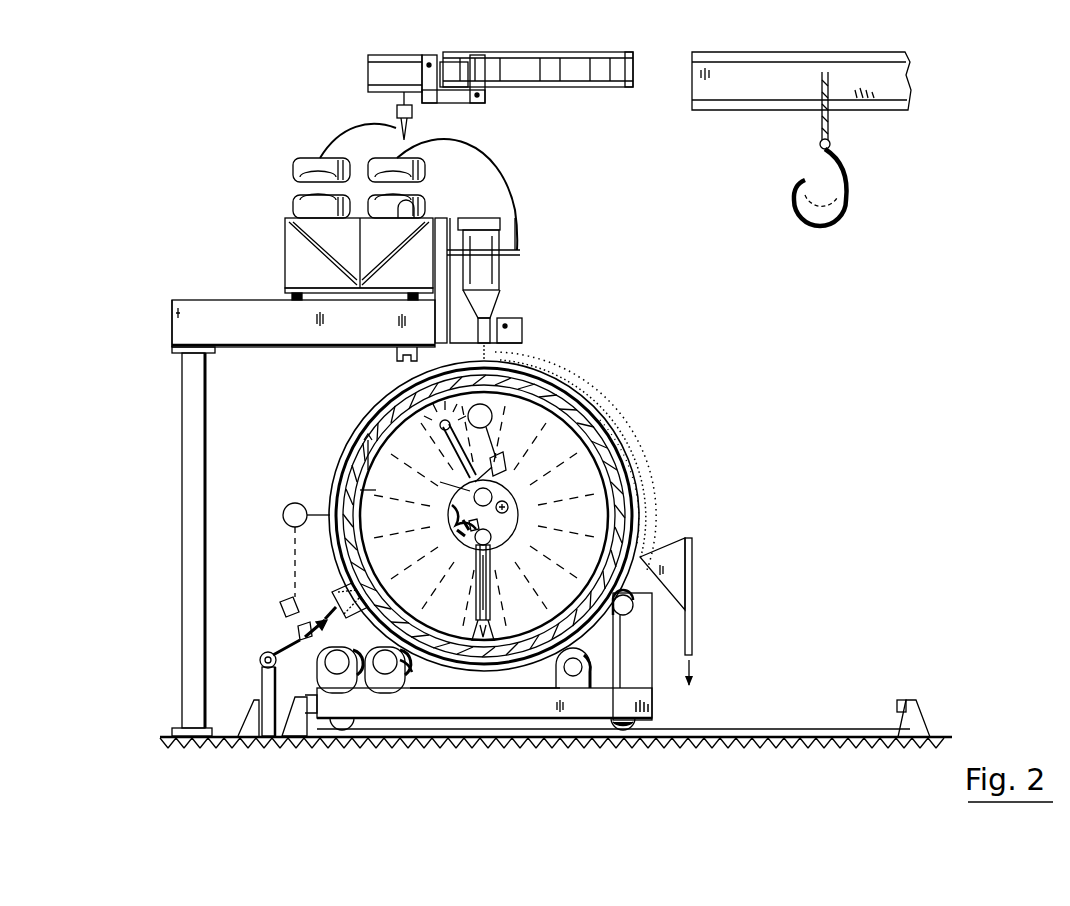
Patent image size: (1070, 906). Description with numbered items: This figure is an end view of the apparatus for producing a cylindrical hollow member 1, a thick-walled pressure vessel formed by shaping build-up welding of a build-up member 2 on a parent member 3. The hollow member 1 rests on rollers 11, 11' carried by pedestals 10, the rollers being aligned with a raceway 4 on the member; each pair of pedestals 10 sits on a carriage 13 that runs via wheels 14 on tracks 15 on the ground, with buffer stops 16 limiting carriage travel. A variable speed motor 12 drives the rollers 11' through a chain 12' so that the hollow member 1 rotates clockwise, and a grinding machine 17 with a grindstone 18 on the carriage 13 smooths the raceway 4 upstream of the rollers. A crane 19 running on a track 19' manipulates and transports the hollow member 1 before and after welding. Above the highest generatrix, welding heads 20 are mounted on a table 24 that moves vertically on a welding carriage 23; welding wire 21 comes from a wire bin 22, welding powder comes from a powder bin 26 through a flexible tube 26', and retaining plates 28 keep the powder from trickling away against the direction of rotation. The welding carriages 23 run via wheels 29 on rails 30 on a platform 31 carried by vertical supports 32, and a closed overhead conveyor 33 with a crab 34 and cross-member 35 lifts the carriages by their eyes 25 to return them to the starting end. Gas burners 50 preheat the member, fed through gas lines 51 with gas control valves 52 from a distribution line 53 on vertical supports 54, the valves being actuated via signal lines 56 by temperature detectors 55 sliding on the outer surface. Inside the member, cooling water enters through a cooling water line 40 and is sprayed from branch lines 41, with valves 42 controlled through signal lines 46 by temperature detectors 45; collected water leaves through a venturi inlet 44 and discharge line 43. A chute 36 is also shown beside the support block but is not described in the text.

The cylindrical hollow member 1 is at (315, 482).
The build-up member 2 is at (355, 440).
The parent member 3 is at (360, 461).
The raceway 4 is at (360, 408).
The pedestal 10 is at (430, 678).
The roller 11 is at (587, 722).
The roller 11' is at (441, 728).
The variable speed motor 12 is at (354, 721).
The chain 12' is at (401, 721).
The carriage 13 is at (552, 712).
The wheel 14 is at (343, 730).
The track 15 is at (752, 738).
The buffer stop 16 is at (292, 737).
The grinding machine 17 is at (655, 660).
The grindstone 18 is at (632, 606).
The crane 19 is at (867, 149).
The crane track 19' is at (818, 107).
The welding head 20 is at (512, 330).
The welding wire 21 is at (398, 157).
The wire bin 22 is at (295, 167).
The welding carriage 23 is at (281, 226).
The table 24 is at (524, 343).
The eye 25 is at (412, 210).
The powder bin 26 is at (526, 280).
The tube 26' is at (536, 309).
The retaining plate 28 is at (420, 345).
The wheel 29 is at (303, 323).
The rail 30 is at (300, 297).
The platform 31 is at (180, 331).
The vertical support 32 is at (190, 424).
The closed overhead conveyor 33 is at (520, 75).
The crab 34 is at (468, 100).
The cross-member 35 is at (413, 113).
The chute 36 is at (686, 571).
The cooling water line 40 is at (495, 496).
The branch line 41 is at (455, 444).
The valve 42 is at (470, 491).
The discharge line 43 is at (490, 571).
The venturi inlet 44 is at (488, 616).
The temperature detector 45 is at (494, 420).
The signal line 46 is at (505, 465).
The gas burner 50 is at (332, 604).
The gas line 51 is at (290, 645).
The gas control valve 52 is at (300, 631).
The distribution line 53 is at (259, 660).
The vertical support 54 is at (265, 688).
The temperature detector 55 is at (282, 515).
The signal line 56 is at (292, 555).